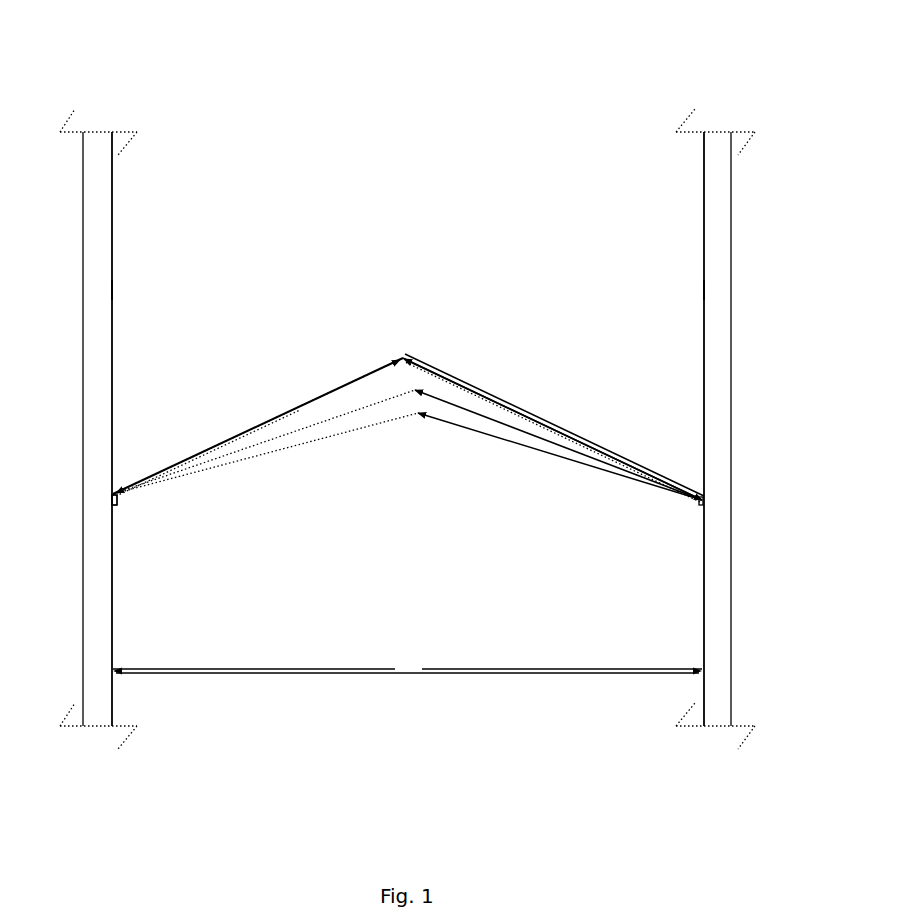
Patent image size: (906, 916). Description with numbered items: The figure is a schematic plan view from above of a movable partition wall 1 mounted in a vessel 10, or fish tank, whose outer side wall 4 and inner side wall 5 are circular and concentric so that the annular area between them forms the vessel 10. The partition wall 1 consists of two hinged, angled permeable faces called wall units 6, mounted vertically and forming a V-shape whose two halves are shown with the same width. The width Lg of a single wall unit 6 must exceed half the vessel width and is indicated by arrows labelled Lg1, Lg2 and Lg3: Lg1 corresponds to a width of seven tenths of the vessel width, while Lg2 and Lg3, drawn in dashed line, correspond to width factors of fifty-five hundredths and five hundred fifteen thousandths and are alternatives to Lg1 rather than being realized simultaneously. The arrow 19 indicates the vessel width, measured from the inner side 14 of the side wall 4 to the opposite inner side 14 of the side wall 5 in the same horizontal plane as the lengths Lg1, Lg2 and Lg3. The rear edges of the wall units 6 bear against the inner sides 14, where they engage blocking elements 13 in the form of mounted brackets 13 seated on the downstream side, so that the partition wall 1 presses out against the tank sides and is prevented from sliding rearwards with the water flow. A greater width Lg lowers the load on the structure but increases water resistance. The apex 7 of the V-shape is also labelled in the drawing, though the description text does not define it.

The movable partition wall 1 is at (378, 273).
The side wall 4 is at (95, 375).
The side wall 5 is at (722, 218).
The wall unit 6 is at (300, 403).
The apex of cable 7 is at (396, 355).
The vessel 10 is at (304, 128).
The blocking element 13 is at (116, 510).
The inner side 14 is at (113, 290).
The arrow 19 is at (330, 673).
The width of a single wall unit Lg is at (250, 426).
The wall unit width arrow Lg1 is at (558, 424).
The wall unit width arrow Lg2 is at (570, 436).
The wall unit width arrow Lg3 is at (578, 444).